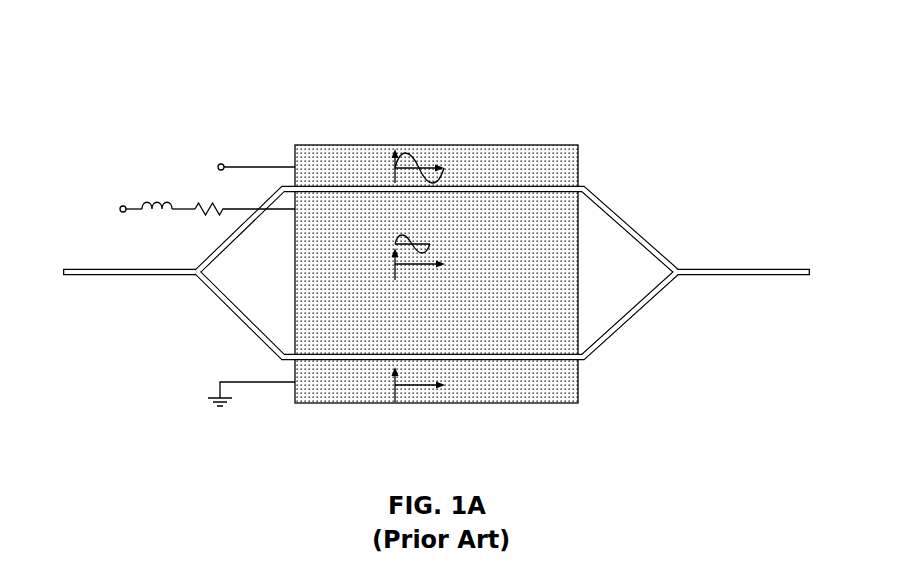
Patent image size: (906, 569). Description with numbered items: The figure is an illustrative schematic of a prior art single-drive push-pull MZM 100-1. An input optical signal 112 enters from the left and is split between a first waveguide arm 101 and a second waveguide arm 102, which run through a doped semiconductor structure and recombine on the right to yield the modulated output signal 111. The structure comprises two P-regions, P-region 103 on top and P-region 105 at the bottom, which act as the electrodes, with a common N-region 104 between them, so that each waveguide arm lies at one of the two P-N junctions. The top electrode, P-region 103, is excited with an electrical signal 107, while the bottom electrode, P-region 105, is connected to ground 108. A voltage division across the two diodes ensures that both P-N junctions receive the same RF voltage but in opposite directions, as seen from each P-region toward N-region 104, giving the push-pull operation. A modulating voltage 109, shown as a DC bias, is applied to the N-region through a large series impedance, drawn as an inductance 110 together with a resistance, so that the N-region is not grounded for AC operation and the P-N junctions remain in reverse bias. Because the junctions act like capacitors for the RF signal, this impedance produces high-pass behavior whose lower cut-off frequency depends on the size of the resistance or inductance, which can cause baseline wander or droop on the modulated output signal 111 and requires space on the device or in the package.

The single-drive push-pull MZM 100-1 is at (138, 46).
The first waveguide arm 101 is at (458, 186).
The second waveguide arm 102 is at (318, 362).
The P-region 103 is at (532, 156).
The N-region 104 is at (565, 300).
The P-region 105 is at (530, 396).
The electrical signal 107 is at (223, 164).
The ground 108 is at (263, 382).
The modulating voltage 109 is at (124, 212).
The inductor 110 is at (162, 205).
The modulated output signal 111 is at (705, 268).
The input optical signal 112 is at (110, 278).